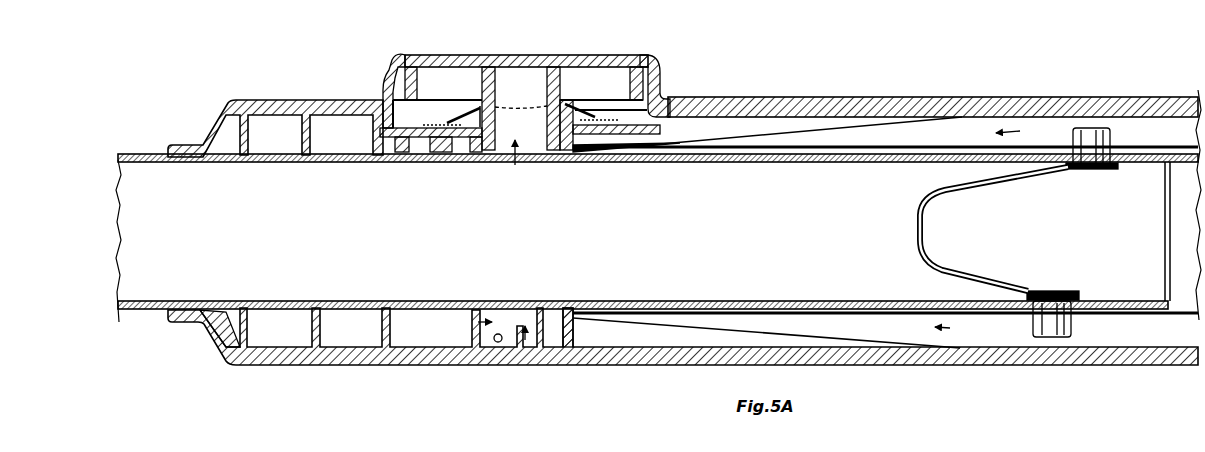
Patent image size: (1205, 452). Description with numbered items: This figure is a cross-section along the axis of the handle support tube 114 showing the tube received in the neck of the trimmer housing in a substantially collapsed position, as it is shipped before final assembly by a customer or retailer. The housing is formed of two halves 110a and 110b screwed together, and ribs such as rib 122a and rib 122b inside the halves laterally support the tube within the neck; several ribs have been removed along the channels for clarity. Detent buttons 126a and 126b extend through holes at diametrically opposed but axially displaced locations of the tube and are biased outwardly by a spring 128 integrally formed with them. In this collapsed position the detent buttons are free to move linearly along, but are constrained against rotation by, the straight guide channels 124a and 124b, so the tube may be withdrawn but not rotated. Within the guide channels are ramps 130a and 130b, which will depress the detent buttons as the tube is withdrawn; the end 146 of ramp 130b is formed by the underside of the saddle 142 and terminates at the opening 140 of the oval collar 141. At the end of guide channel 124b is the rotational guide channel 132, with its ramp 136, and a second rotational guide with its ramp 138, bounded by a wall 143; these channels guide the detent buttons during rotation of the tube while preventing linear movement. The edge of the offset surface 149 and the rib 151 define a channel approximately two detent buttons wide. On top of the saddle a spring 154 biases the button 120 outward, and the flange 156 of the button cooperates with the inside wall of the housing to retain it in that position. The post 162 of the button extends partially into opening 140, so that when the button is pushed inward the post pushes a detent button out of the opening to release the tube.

The housing half 110a is at (842, 97).
The housing half 110b is at (1027, 366).
The tube 114 is at (530, 163).
The button 120 is at (522, 55).
The rib 122a is at (262, 130).
The rib 122b is at (300, 330).
The guide channel 124a is at (1020, 131).
The guide channel 124b is at (950, 328).
The detent button 126a is at (1108, 140).
The detent button 126b is at (1070, 330).
The spring 128 is at (985, 193).
The ramp 130a is at (722, 122).
The ramp 130b is at (590, 335).
The rotational guide channel 132 is at (525, 340).
The ramp 136 is at (560, 332).
The ramp 138 is at (498, 343).
The opening 140 is at (515, 165).
The collar 141 is at (450, 116).
The saddle 142 is at (612, 142).
The wall 143 is at (478, 322).
The end of ramp 146 is at (597, 150).
The offset surface 149 is at (558, 145).
The rib 151 is at (470, 165).
The spring 154 is at (398, 62).
The flange 156 is at (662, 84).
The post 162 is at (472, 67).